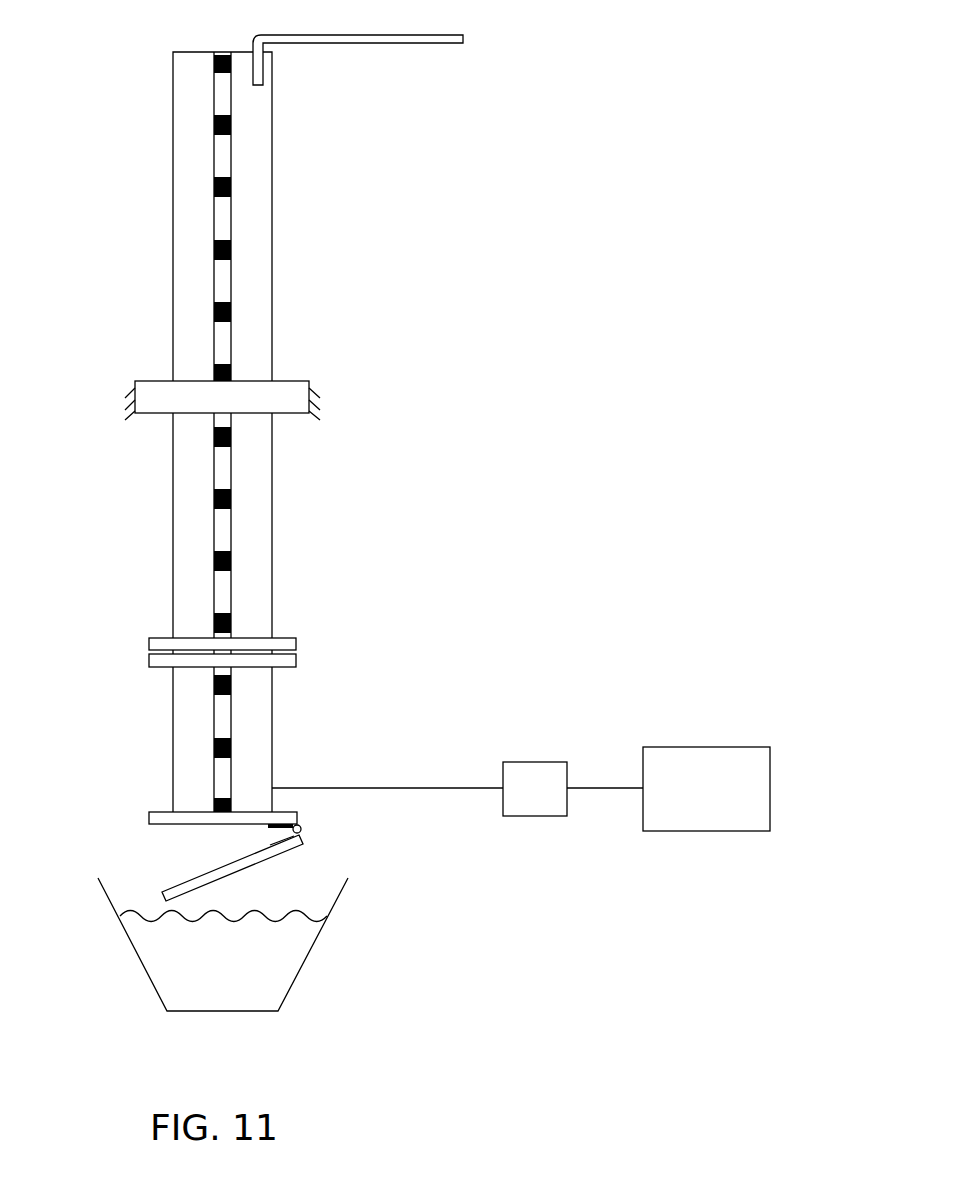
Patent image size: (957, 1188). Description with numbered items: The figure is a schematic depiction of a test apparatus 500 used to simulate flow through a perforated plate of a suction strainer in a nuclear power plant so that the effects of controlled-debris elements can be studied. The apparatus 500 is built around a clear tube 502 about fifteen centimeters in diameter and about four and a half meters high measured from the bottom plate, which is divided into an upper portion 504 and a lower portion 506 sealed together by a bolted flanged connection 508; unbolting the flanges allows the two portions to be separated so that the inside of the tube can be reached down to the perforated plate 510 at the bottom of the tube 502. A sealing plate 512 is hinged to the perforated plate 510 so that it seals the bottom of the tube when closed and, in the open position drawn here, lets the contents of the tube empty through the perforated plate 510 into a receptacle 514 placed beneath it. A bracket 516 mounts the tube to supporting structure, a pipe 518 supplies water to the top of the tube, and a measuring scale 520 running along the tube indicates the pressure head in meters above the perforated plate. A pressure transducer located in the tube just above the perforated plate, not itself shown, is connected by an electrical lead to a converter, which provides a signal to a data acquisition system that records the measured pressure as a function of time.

The apparatus 500 is at (410, 206).
The clear tube 502 is at (272, 307).
The upper portion 504 is at (267, 538).
The lower portion 506 is at (188, 703).
The bolted flanged connection 508 is at (147, 652).
The perforated plate 510 is at (155, 818).
The sealing plate 512 is at (302, 838).
The receptacle 514 is at (280, 953).
The bracket 516 is at (150, 383).
The pipe 518 is at (428, 40).
The measuring scale 520 is at (224, 162).